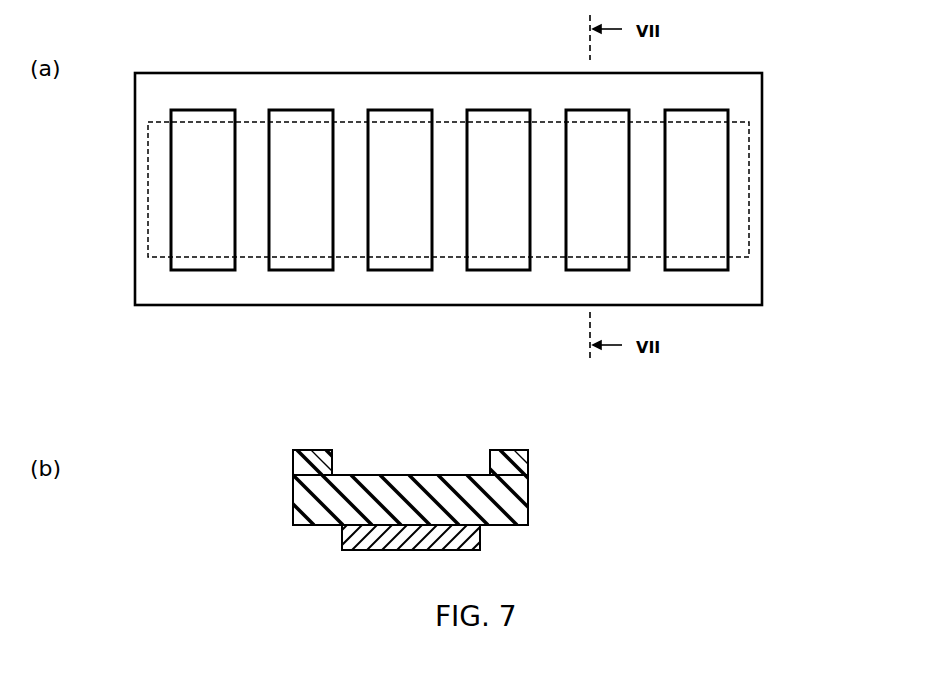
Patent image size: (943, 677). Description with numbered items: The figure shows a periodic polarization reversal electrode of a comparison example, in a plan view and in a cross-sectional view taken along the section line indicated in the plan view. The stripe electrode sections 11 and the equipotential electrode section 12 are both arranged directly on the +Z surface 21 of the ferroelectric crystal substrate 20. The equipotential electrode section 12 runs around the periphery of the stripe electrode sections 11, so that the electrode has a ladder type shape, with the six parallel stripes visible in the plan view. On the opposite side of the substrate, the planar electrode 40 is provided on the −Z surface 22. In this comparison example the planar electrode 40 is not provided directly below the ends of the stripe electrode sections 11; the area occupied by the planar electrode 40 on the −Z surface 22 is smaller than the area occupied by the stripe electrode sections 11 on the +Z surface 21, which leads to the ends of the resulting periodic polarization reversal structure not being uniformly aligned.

The stripe electrode sections 11 is at (253, 135).
The equipotential electrode section 12 is at (743, 90).
The ferroelectric crystal substrate 20 is at (710, 195).
The +Z surface 21 is at (512, 480).
The -Z surface 22 is at (515, 517).
The planar electrode 40 is at (737, 143).